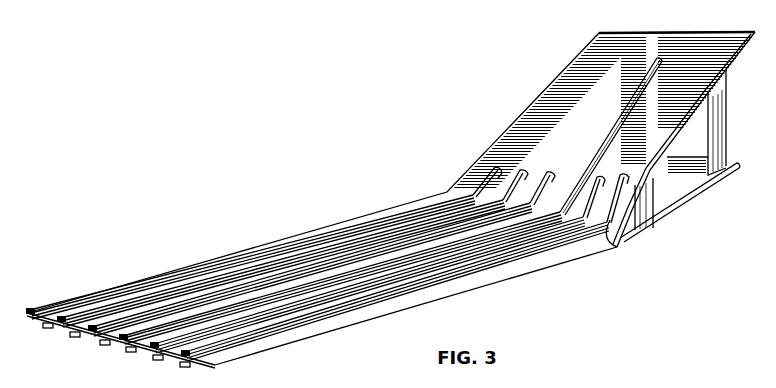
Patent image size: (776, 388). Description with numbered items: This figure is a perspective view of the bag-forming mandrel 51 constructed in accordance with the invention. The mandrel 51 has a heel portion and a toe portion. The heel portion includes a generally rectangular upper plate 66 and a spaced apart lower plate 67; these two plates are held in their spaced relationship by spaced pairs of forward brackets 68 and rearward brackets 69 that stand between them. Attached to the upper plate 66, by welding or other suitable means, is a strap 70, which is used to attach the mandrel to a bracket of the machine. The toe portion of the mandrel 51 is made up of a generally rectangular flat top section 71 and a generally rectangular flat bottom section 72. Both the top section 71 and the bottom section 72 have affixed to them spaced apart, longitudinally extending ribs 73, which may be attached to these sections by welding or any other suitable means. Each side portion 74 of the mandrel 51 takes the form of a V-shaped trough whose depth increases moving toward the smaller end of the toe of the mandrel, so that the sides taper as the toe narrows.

The bag-forming mandrel 51 is at (390, 210).
The upper plate 66 is at (603, 54).
The lower plate 67 is at (670, 207).
The forward brackets 68 is at (724, 120).
The rearward brackets 69 is at (648, 205).
The strap 70 is at (636, 90).
The flat top section 71 is at (54, 306).
The flat bottom section 72 is at (149, 358).
The ribs 73 is at (105, 346).
The side portion 74 is at (476, 288).